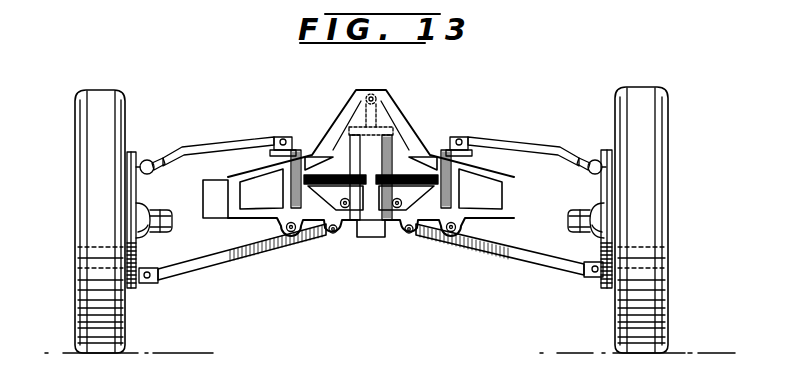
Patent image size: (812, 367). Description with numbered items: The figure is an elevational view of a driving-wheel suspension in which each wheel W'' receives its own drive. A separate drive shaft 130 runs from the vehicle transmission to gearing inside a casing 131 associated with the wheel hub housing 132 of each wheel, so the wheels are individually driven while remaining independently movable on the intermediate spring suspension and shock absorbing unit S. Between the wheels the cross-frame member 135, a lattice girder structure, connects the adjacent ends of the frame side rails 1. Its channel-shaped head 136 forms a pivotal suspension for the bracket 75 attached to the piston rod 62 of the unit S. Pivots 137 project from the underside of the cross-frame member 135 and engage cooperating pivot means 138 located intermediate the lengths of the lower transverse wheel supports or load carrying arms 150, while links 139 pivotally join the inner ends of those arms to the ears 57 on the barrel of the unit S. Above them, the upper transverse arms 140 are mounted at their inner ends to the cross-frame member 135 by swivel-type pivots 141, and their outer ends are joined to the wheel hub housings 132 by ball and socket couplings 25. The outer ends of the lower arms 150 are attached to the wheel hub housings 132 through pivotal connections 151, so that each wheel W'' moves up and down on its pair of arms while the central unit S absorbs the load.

The wheel w is at (88, 135).
The frame side rail 1 is at (220, 200).
The ball and socket coupling 25 is at (150, 159).
The ear 57 is at (395, 198).
The piston rod 62 is at (356, 113).
The bracket 75 is at (374, 93).
The drive shaft 130 is at (175, 224).
The casing 131 is at (148, 238).
The wheel hub housing 132 is at (138, 193).
The cross-frame member 135 is at (239, 151).
The channel-shaped head 136 is at (402, 116).
The pivot 137 is at (291, 222).
The pivot means 138 is at (282, 250).
The link 139 is at (334, 238).
The upper transverse arm 140 is at (263, 146).
The swivel-type pivot 141 is at (292, 137).
The lower transverse arm 150 is at (232, 266).
The pivotal connection 151 is at (160, 284).
The spring suspension and shock absorbing unit S is at (372, 238).